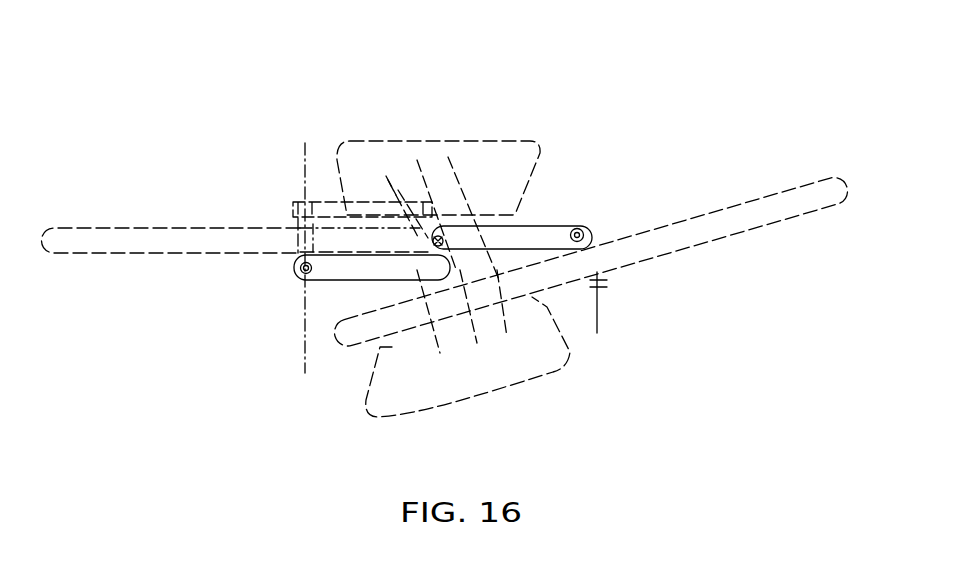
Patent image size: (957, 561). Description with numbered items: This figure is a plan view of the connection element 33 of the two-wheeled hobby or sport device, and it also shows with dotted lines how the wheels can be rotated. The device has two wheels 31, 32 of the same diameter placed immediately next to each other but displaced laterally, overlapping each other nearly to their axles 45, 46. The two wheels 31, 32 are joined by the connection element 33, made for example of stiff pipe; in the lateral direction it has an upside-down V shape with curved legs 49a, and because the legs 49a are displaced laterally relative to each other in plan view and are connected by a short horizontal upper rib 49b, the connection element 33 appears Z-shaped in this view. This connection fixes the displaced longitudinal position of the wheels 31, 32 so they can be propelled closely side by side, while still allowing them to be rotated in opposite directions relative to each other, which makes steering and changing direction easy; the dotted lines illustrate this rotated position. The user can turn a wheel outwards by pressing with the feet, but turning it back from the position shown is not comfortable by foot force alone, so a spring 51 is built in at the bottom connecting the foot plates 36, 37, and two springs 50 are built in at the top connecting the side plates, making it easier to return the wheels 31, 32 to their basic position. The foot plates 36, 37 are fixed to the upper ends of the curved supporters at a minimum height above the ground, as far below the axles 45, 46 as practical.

The wheel 31 is at (108, 219).
The wheel 32 is at (802, 226).
The connection element 33 is at (569, 210).
The foot plate 36 is at (385, 187).
The foot plate 37 is at (570, 352).
The axle 45 is at (301, 183).
The axle 46 is at (600, 314).
The curved leg 49a is at (330, 268).
The upper rib 49b is at (405, 203).
The spring 50 is at (430, 205).
The spring 51 is at (347, 147).